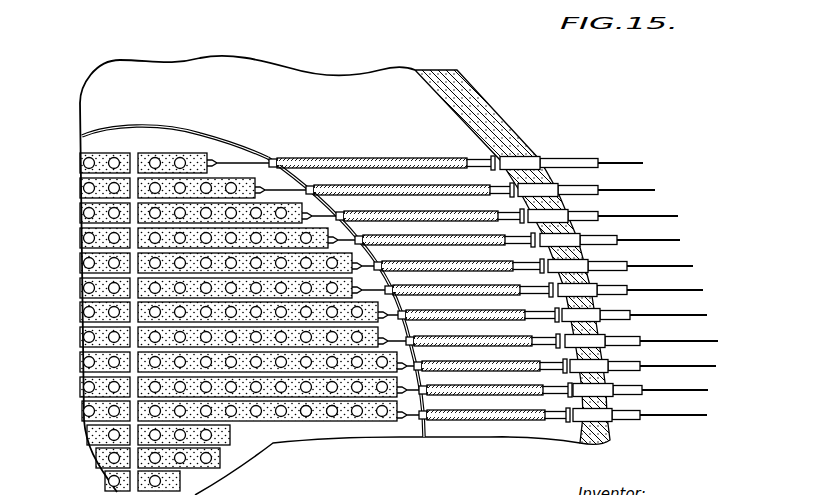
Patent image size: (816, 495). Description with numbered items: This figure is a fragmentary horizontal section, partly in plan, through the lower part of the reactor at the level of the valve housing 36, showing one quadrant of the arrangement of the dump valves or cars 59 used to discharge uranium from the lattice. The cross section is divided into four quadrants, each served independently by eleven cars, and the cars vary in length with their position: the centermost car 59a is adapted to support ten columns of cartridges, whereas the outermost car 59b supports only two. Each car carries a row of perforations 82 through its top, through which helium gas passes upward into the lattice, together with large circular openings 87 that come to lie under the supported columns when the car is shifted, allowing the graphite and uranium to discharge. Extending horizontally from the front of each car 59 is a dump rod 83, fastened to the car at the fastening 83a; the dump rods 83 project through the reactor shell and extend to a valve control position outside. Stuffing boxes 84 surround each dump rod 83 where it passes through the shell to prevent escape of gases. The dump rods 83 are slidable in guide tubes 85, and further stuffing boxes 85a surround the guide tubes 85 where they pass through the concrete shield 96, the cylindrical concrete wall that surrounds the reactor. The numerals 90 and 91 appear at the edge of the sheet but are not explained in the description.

The valve housing 36 is at (138, 100).
The dump valve car 59 is at (80, 238).
The centermost dump valve car 59a is at (370, 420).
The outermost dump valve car 59b is at (192, 153).
The perforation 82 is at (335, 418).
The dump rod 83 is at (360, 160).
The dump rod fastening 83a is at (266, 152).
The stuffing box 84 is at (331, 160).
The guide tube 85 is at (420, 160).
The stuffing box 85a is at (540, 183).
The circular opening 87 is at (115, 158).
The element 90 is at (208, 7).
The element 91 is at (313, 5).
The concrete shield 96 is at (503, 115).